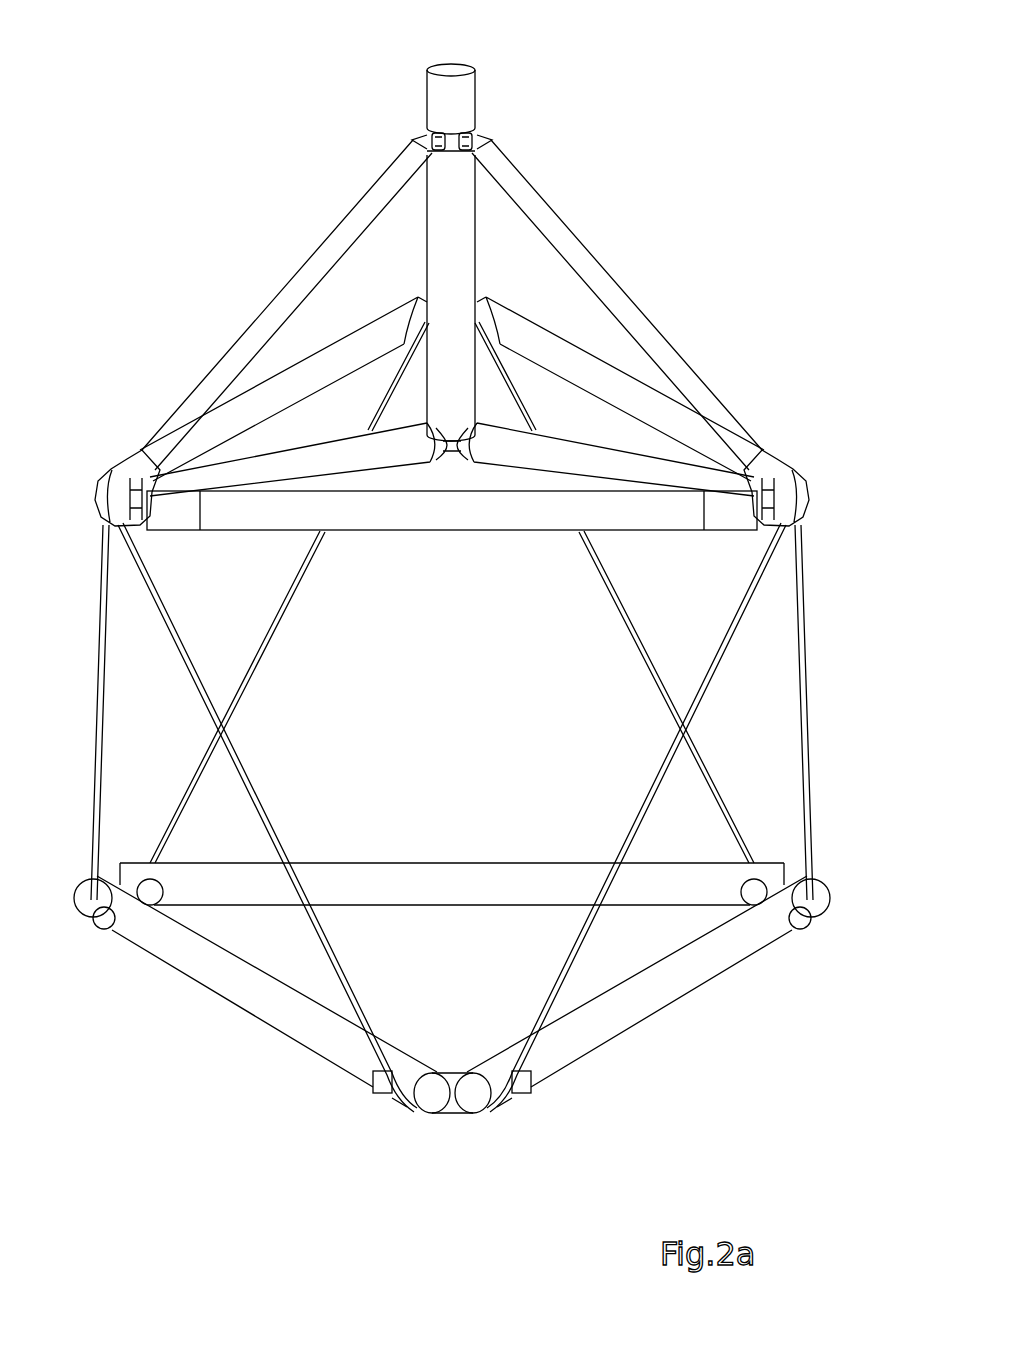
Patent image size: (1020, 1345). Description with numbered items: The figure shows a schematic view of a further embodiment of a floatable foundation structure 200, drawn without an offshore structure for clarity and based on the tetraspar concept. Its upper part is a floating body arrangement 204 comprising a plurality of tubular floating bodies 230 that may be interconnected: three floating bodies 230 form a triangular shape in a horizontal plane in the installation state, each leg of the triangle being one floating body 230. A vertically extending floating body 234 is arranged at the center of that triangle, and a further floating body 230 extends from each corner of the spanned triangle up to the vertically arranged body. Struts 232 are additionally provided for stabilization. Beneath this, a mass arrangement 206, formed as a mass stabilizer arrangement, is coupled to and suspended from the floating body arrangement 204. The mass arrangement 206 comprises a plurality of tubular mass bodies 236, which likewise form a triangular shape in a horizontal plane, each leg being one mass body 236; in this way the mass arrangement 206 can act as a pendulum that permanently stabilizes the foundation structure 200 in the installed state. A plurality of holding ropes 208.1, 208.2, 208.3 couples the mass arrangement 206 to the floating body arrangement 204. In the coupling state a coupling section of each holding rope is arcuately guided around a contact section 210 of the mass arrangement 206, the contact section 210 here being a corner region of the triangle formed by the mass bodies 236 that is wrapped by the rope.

The floatable foundation structure 200 is at (803, 88).
The floating body arrangement 204 is at (672, 245).
The mass arrangement 206 is at (245, 1102).
The holding rope 208.1 is at (266, 806).
The holding rope 208.2 is at (270, 640).
The holding rope 208.3 is at (634, 640).
The contact section 210 is at (94, 952).
The floating body 230 is at (303, 445).
The strut 232 is at (345, 222).
The vertically extending floating body 234 is at (470, 92).
The tubular mass body 236 is at (466, 870).